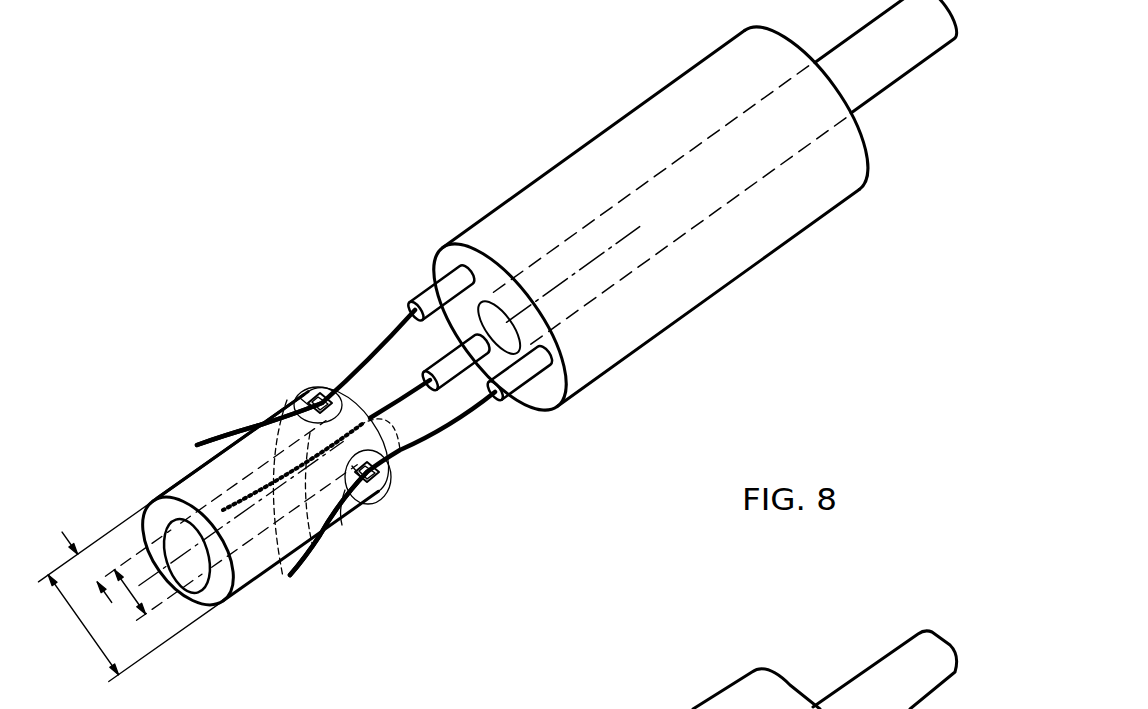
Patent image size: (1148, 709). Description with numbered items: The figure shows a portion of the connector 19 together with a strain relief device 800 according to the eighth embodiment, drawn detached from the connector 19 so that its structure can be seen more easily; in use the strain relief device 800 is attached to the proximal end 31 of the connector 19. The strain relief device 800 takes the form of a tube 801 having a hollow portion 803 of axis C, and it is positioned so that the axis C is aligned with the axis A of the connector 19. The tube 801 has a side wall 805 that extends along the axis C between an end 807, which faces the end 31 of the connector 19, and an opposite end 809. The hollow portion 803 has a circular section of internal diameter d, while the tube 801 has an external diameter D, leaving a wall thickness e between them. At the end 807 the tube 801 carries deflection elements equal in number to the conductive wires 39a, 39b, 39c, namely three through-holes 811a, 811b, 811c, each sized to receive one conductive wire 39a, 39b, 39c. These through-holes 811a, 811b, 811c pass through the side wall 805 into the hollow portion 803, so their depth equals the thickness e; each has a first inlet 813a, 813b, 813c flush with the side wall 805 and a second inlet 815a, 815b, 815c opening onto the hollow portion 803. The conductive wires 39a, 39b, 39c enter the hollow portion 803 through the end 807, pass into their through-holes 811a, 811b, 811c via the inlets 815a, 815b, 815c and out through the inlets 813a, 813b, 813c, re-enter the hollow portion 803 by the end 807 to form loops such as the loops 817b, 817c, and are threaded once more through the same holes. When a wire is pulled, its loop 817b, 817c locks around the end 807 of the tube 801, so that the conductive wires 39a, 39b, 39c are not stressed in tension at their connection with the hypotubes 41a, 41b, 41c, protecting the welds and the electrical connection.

The connector 19 is at (625, 135).
The proximal end of the connector 31 is at (463, 243).
The axis of the connector A is at (640, 230).
The hypotube 41a is at (445, 366).
The hypotube 41b is at (438, 293).
The hypotube 41c is at (545, 390).
The conductive wire 39a is at (392, 416).
The conductive wire 39b is at (383, 337).
The conductive wire 39c is at (470, 424).
The strain relief device 800 is at (334, 245).
The tube 801 is at (160, 492).
The hollow portion 803 is at (167, 585).
The side wall 805 is at (208, 466).
The end of the tube 807 is at (392, 473).
The end of the tube 809 is at (205, 596).
The through-hole 811a is at (336, 582).
The through-hole 811b is at (305, 392).
The through-hole 811c is at (380, 537).
The first inlet 813a is at (300, 545).
The first inlet 813b is at (308, 400).
The first inlet 813c is at (370, 488).
The second inlet 815a is at (398, 448).
The second inlet 815b is at (322, 392).
The second inlet 815c is at (345, 500).
The loop 817b is at (310, 380).
The loop 817c is at (397, 487).
The axis of the hollow portion C is at (250, 584).
The external diameter D is at (86, 622).
The internal diameter d is at (119, 598).
The thickness e is at (88, 558).